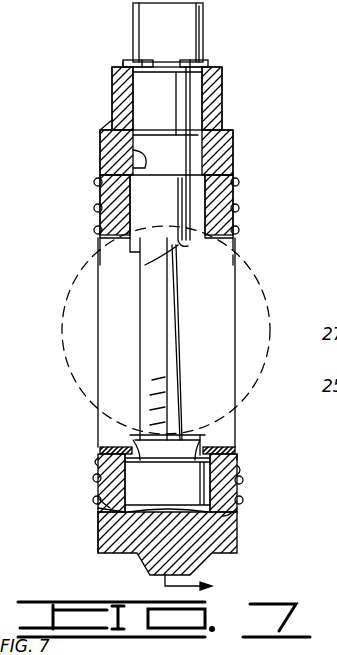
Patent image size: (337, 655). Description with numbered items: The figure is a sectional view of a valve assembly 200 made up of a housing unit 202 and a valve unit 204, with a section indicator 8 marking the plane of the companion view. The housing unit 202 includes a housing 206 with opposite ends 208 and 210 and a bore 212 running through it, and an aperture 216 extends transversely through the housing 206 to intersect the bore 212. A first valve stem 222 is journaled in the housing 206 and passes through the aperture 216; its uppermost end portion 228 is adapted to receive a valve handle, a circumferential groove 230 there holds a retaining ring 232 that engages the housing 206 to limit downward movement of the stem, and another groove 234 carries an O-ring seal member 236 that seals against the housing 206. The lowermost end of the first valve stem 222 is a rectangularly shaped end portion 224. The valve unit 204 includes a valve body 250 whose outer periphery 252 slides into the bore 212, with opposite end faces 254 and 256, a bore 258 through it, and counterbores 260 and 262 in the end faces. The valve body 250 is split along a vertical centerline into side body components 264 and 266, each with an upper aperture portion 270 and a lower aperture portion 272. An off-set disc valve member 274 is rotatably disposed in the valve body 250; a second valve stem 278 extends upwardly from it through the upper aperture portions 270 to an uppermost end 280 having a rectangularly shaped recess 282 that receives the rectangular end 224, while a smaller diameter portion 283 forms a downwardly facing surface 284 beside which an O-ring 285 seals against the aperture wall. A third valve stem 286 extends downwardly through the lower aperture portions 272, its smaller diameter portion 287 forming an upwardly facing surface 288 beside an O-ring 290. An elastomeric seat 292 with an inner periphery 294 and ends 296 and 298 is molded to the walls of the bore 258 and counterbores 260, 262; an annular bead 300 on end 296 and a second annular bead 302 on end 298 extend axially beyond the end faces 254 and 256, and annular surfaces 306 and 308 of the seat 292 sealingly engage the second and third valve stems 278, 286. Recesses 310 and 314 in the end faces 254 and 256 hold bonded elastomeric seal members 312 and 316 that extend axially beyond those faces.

The section line 8- 8 is at (198, 588).
The valve assembly 200 is at (224, 36).
The housing unit 202 is at (222, 101).
The valve unit 204 is at (238, 189).
The housing 206 is at (222, 140).
The end of housing 208 is at (110, 543).
The end of housing 210 is at (237, 538).
The bore 212 is at (232, 553).
The aperture 216 is at (133, 86).
The first valve stem 222 is at (185, 78).
The rectangularly shaped end portion 224 is at (143, 165).
The uppermost end portion 228 is at (176, 22).
The circumferential groove 230 is at (134, 62).
The retaining ring 232 is at (126, 62).
The groove 234 is at (172, 124).
The O-ring seal member 236 is at (117, 122).
The valve body 250 is at (243, 486).
The outer periphery 252 is at (99, 522).
The end face 254 is at (97, 495).
The end face 256 is at (239, 184).
The bore 258 is at (236, 248).
The counterbore 260 is at (98, 462).
The counterbore 262 is at (240, 470).
The side body component 264 is at (96, 230).
The side body component 266 is at (239, 230).
The upper aperture portion 270 is at (233, 162).
The lower aperture portion 272 is at (126, 480).
The disc valve member 274 is at (150, 328).
The second valve stem 278 is at (102, 264).
The uppermost end 280 is at (158, 274).
The rectangularly shaped recess 282 is at (96, 184).
The smaller diameter portion 283 is at (188, 256).
The downwardly facing surface 284 is at (160, 290).
The O-ring 285 is at (118, 240).
The third valve stem 286 is at (185, 448).
The smaller diameter portion 287 is at (176, 430).
The upwardly facing surface 288 is at (135, 436).
The O-ring 290 is at (110, 452).
The elastomeric seat 292 is at (237, 446).
The inner periphery 294 is at (105, 447).
The end of seat 296 is at (97, 472).
The end of seat 298 is at (238, 457).
The annular bead 300 is at (97, 208).
The second annular bead 302 is at (240, 210).
The annular surface 306 is at (236, 264).
The annular surface 308 is at (235, 432).
The recess 310 is at (100, 496).
The elastomeric seal member 312 is at (100, 506).
The recess 314 is at (240, 517).
The elastomeric seal member 316 is at (243, 500).